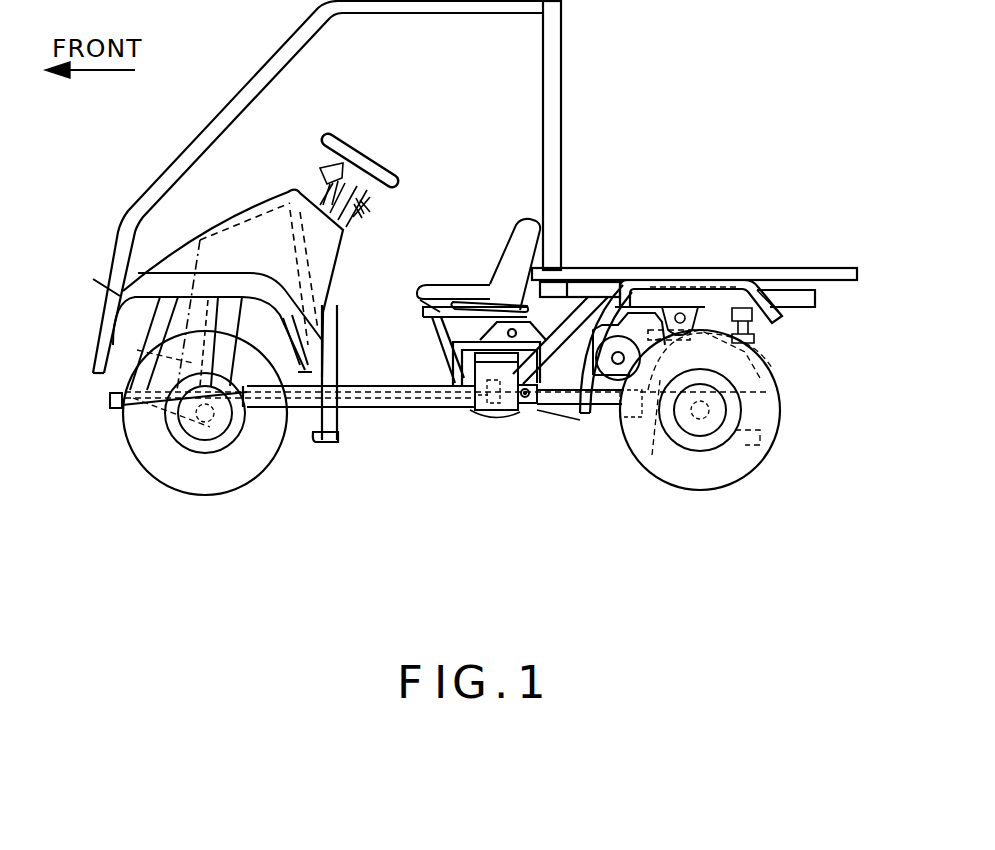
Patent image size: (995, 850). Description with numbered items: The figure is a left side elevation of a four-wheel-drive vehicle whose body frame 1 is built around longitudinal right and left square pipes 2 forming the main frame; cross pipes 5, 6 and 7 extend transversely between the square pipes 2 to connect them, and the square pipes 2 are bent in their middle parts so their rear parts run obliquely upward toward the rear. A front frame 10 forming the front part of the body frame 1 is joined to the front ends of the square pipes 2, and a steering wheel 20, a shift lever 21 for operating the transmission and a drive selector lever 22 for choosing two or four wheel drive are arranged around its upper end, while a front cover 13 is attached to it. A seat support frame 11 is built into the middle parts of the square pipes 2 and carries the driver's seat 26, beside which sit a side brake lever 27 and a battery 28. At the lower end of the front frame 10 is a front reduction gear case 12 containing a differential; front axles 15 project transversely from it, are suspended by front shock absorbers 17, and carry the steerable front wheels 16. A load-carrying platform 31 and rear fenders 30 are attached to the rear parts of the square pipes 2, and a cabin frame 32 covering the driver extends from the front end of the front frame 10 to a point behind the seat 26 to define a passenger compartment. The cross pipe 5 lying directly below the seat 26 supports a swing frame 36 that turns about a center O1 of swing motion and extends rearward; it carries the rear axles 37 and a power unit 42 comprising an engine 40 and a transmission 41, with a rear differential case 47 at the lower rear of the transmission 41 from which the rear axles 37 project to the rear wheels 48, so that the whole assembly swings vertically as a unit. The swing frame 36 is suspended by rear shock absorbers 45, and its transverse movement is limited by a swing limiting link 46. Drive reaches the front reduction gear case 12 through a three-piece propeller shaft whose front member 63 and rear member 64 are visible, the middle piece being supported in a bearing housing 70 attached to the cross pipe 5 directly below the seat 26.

The body frame 1 is at (372, 424).
The square pipes 2 is at (597, 298).
The cross pipe 5 is at (491, 420).
The cross pipe 6 is at (677, 300).
The cross pipe 7 is at (771, 300).
The front frame 10 is at (186, 246).
The seat support frame 11 is at (418, 317).
The front reduction gear case 12 is at (150, 353).
The front cover 13 is at (248, 193).
The front axles 15 is at (212, 422).
The front wheels 16 is at (164, 468).
The front shock absorbers 17 is at (100, 282).
The steering wheel 20 is at (352, 157).
The shift lever 21 is at (312, 186).
The drive selector lever 22 is at (372, 217).
The seat 26 is at (442, 288).
The side brake lever 27 is at (473, 306).
The battery 28 is at (483, 358).
The rear fenders 30 is at (701, 279).
The load-carrying platform 31 is at (825, 267).
The cabin frame 32 is at (289, 46).
The swing frame 36 is at (652, 456).
The rear axles 37 is at (757, 470).
The engine 40 is at (620, 345).
The transmission 41 is at (723, 305).
The power unit 42 is at (644, 310).
The rear shock absorbers 45 is at (745, 378).
The swing limiting link 46 is at (770, 392).
The rear differential case 47 is at (720, 410).
The rear wheels 48 is at (698, 481).
The front member 63 is at (357, 386).
The rear member 64 is at (587, 417).
The bearing housing 70 is at (458, 411).
The center of swing motion O1 is at (528, 410).